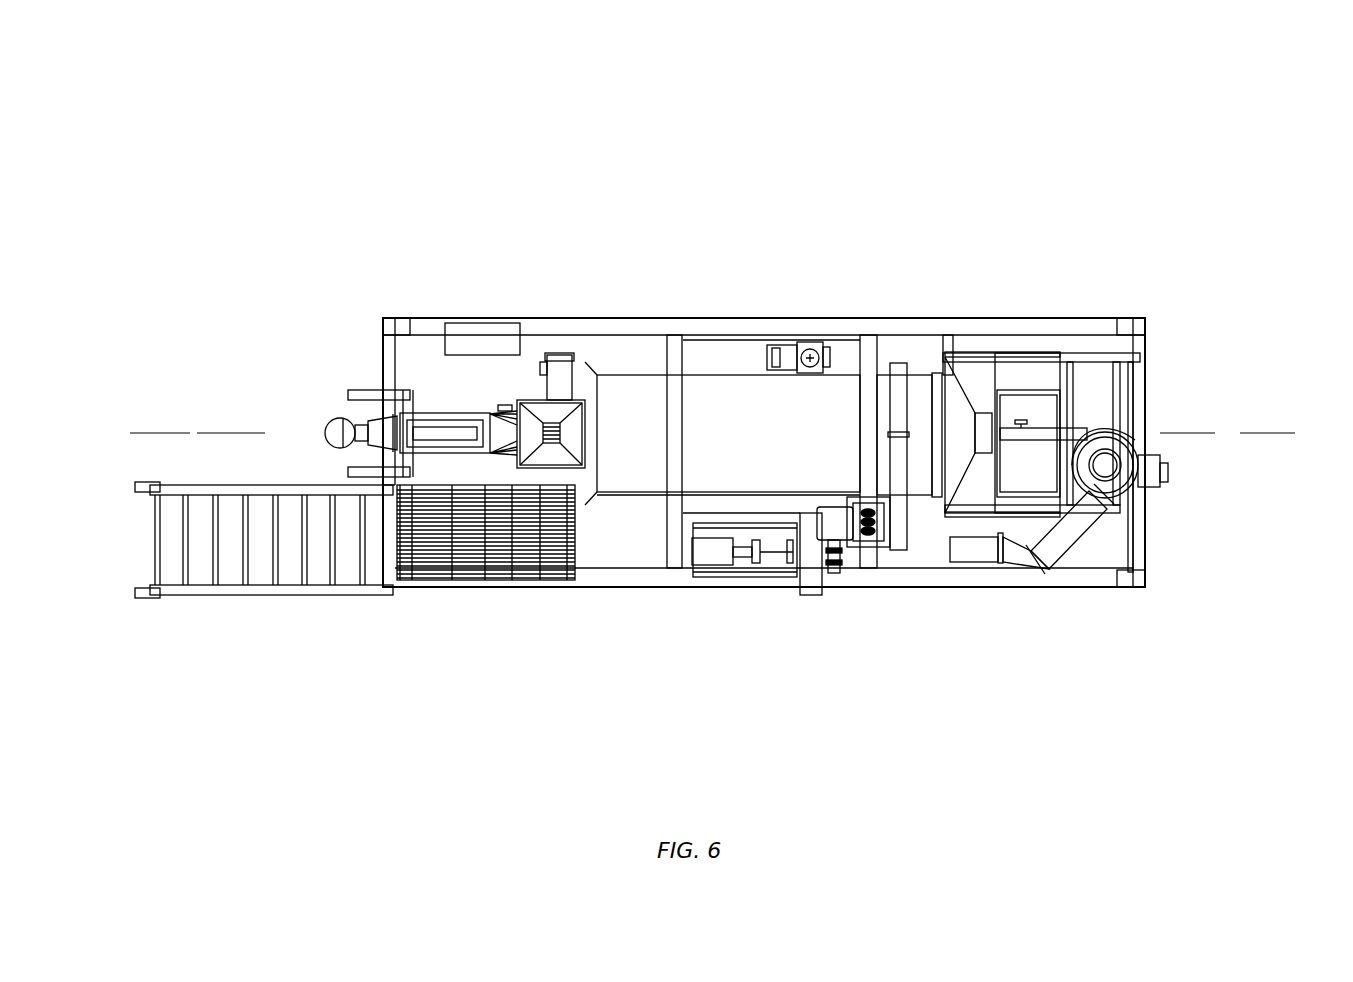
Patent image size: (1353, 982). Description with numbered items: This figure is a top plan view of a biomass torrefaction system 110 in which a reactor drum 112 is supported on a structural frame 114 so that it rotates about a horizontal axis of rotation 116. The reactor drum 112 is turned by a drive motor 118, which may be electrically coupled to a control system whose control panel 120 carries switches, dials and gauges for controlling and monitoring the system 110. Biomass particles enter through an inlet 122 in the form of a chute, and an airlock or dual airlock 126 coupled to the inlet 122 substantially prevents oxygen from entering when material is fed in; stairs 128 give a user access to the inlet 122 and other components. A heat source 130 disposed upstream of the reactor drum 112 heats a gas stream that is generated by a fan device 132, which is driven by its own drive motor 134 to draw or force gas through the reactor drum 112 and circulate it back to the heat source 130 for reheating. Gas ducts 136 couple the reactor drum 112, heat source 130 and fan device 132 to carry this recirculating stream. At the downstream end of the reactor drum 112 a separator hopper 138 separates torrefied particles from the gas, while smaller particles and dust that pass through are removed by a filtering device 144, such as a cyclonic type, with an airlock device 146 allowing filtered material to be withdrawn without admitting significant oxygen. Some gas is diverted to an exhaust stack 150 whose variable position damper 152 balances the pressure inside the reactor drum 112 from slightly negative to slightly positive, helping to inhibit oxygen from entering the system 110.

The biomass torrefaction system 110 is at (812, 125).
The reactor drum 112 is at (632, 450).
The structural frame 114 is at (641, 330).
The horizontal axis of rotation 116 is at (1225, 433).
The drive motor 118 is at (837, 530).
The control panel 120 is at (473, 323).
The inlet 122 is at (545, 410).
The airlock 126 is at (566, 375).
The stairs 128 is at (338, 597).
The heat source 130 is at (437, 427).
The fan device 132 is at (810, 580).
The drive motor 134 is at (717, 550).
The gas ducts 136 is at (323, 432).
The separator hopper 138 is at (977, 377).
The filtering device 144 is at (1097, 437).
The airlock device 146 is at (1153, 480).
The exhaust stack 150 is at (817, 345).
The variable position damper 152 is at (785, 353).